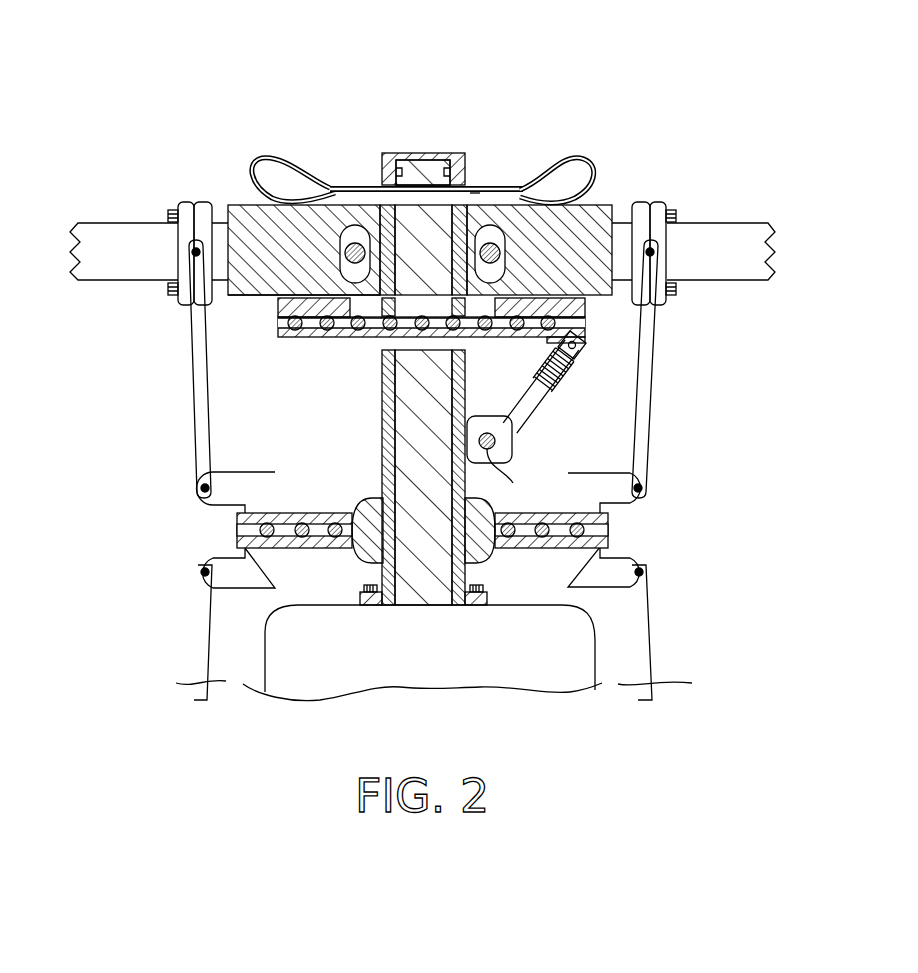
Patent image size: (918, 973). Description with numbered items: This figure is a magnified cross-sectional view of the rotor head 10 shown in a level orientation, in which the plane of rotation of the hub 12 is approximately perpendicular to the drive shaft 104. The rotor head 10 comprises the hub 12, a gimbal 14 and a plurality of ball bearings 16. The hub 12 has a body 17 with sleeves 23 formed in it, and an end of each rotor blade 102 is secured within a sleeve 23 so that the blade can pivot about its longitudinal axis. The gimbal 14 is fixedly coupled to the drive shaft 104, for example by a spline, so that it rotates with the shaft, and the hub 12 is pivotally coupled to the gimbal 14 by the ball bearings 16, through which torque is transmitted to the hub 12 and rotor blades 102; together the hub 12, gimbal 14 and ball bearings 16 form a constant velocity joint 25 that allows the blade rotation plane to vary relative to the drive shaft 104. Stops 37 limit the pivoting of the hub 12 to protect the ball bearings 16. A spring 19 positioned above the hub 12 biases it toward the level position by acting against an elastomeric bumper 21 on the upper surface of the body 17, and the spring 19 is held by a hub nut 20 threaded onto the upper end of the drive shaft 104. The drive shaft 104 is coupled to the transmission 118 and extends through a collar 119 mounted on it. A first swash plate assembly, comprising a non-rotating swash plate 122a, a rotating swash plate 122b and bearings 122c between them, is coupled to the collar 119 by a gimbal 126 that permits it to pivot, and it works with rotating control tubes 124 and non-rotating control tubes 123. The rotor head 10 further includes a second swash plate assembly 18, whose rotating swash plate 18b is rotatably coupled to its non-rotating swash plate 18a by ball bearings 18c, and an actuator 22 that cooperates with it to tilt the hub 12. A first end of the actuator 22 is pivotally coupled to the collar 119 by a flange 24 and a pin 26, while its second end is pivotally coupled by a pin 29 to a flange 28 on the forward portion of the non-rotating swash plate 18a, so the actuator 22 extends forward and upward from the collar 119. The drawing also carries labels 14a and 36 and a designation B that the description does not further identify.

The rotor head 10 is at (645, 50).
The hub 12 is at (222, 225).
The gimbal 14 is at (595, 315).
The body bore liner 14a is at (358, 222).
The ball bearings 16 is at (452, 256).
The body 17 is at (257, 300).
The second swash plate assembly 18 is at (595, 318).
The non-rotating swash plate 18a is at (318, 338).
The rotating swash plate 18b is at (278, 330).
The ball bearings 18c is at (375, 303).
The spring 19 is at (592, 182).
The hub nut 20 is at (452, 153).
The elastomeric bumper 21 is at (257, 203).
The actuator 22 is at (566, 392).
The sleeves 23 is at (205, 306).
The flange 24 is at (513, 447).
The constant velocity joint 25 is at (473, 208).
The pin 26 is at (505, 495).
The flange 28 is at (540, 345).
The pin 29 is at (578, 366).
The pin 36 is at (490, 218).
The stops 37 is at (464, 302).
The rotor blades 102 is at (108, 282).
The drive shaft 104 is at (432, 203).
The transmission 118 is at (288, 667).
The collar 119 is at (373, 455).
The non-rotating swash plate 122a is at (235, 538).
The rotating swash plate 122b is at (232, 520).
The bearings 122c is at (336, 548).
The non-rotating control tubes 123 is at (195, 648).
The rotating control tubes 124 is at (192, 407).
The gimbal 126 is at (365, 505).
The direction B is at (478, 196).